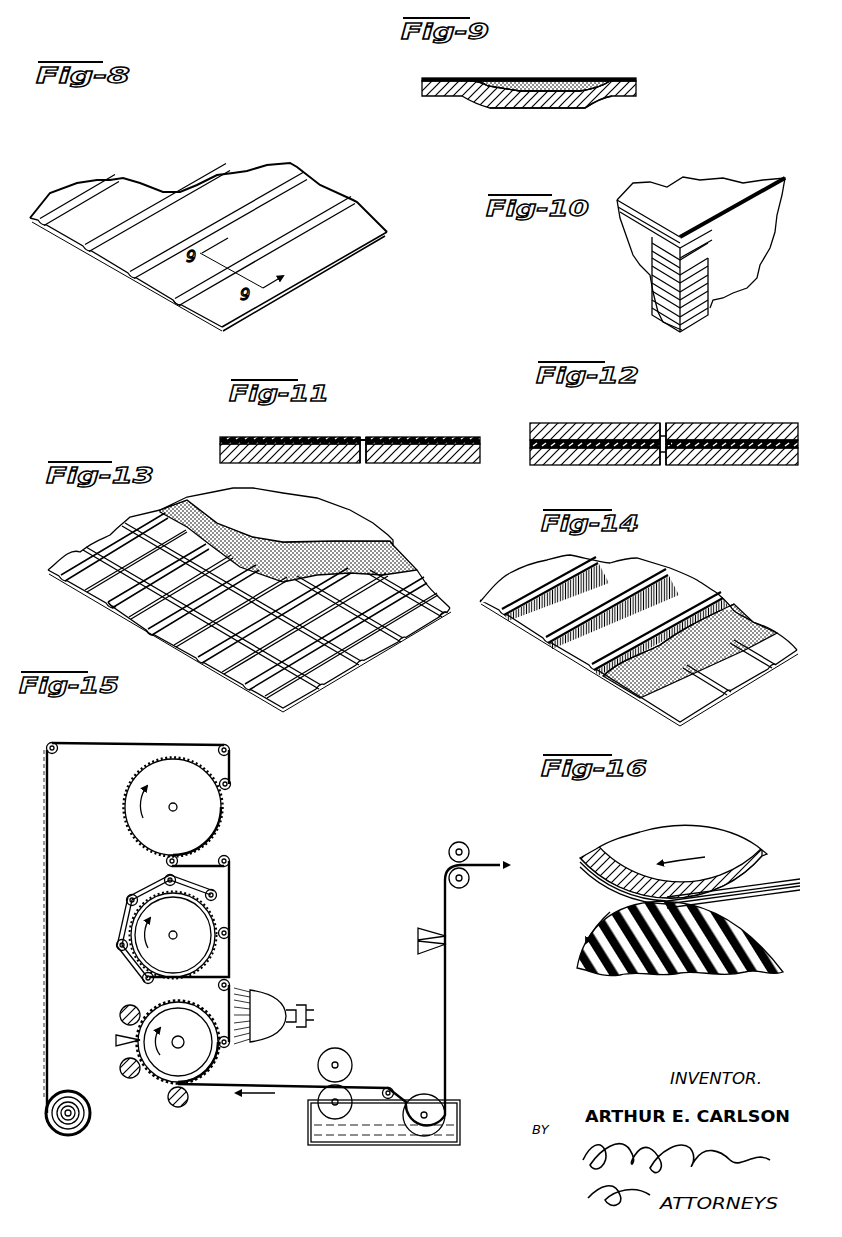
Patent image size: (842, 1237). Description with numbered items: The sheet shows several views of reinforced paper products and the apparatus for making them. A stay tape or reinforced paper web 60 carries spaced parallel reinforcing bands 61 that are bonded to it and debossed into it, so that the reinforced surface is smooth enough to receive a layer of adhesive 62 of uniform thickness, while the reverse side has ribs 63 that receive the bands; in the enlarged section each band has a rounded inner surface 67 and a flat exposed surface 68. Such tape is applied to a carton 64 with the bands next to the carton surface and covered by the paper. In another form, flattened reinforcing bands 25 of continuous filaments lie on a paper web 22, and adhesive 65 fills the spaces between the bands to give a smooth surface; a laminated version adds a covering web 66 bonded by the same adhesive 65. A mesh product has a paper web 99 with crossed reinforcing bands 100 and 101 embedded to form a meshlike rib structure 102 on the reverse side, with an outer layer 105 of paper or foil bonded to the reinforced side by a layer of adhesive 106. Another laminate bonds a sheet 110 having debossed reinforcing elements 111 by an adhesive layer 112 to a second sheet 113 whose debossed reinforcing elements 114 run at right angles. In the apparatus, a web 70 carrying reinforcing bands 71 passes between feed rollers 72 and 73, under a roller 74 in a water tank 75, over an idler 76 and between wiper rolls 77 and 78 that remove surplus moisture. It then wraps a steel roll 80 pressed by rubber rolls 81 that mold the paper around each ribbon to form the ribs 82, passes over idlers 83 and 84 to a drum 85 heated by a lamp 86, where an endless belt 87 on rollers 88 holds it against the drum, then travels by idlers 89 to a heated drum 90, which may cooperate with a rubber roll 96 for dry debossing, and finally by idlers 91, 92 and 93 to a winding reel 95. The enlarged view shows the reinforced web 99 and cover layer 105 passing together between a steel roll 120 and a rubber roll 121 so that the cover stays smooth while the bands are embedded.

In FIG. 8, the reinforced paper web 60 is at (255, 182).
In FIG. 9, the reinforced paper web 60 is at (637, 89).
In FIG. 10, the reinforced paper web 60 is at (687, 308).
In FIG. 8, the reinforcing bands 61 is at (137, 270).
In FIG. 9, the reinforcing bands 61 is at (568, 81).
In FIG. 10, the reinforcing bands 61 is at (710, 267).
In FIG. 9, the layer of adhesive 62 is at (616, 78).
In FIG. 8, the ribs 63 is at (178, 305).
In FIG. 9, the ribs 63 is at (600, 108).
In FIG. 10, the ribs 63 is at (652, 290).
In FIG. 10, the carton 64 is at (747, 268).
In FIG. 9, the inner surface of band 67 is at (545, 97).
In FIG. 9, the exposed surface of band 68 is at (547, 80).
In FIG. 11, the paper web 22 is at (390, 456).
In FIG. 12, the paper web 22 is at (690, 466).
In FIG. 11, the reinforcing bands 25 is at (320, 438).
In FIG. 12, the reinforcing bands 25 is at (590, 456).
In FIG. 11, the adhesive 65 is at (380, 441).
In FIG. 12, the adhesive 65 is at (634, 441).
In FIG. 12, the covering web 66 is at (684, 425).
In FIG. 13, the paper web 99 is at (330, 666).
In FIG. 16, the paper web 99 is at (775, 893).
In FIG. 13, the reinforcing bands 100 is at (385, 660).
In FIG. 16, the reinforcing bands 100 is at (748, 888).
In FIG. 13, the reinforcing bands 101 is at (128, 598).
In FIG. 13, the meshlike rib structure 102 is at (150, 635).
In FIG. 13, the outer layer 105 is at (368, 535).
In FIG. 16, the outer layer 105 is at (780, 880).
In FIG. 13, the layer of adhesive 106 is at (400, 558).
In FIG. 14, the sheet 110 is at (690, 705).
In FIG. 14, the debossed reinforcing elements 111 is at (742, 665).
In FIG. 14, the adhesive layer 112 is at (730, 622).
In FIG. 14, the second sheet 113 is at (675, 592).
In FIG. 14, the debossed reinforcing elements 114 is at (593, 670).
In FIG. 15, the web 70 is at (449, 978).
In FIG. 15, the reinforcing bands 71 is at (420, 938).
In FIG. 15, the feed roller 72 is at (460, 842).
In FIG. 15, the feed roller 73 is at (468, 884).
In FIG. 15, the roller 74 is at (424, 1137).
In FIG. 15, the tank 75 is at (382, 1142).
In FIG. 15, the idler 76 is at (392, 1088).
In FIG. 15, the wiper roll 77 is at (341, 1058).
In FIG. 15, the wiper roll 78 is at (320, 1092).
In FIG. 15, the steel roll 80 is at (158, 1077).
In FIG. 15, the rubber rolls 81 is at (119, 1015).
In FIG. 15, the ribs 82 is at (116, 1040).
In FIG. 15, the idler 83 is at (232, 1046).
In FIG. 15, the idler 84 is at (230, 979).
In FIG. 15, the drum 85 is at (145, 956).
In FIG. 15, the lamp 86 is at (268, 1005).
In FIG. 15, the endless belt 87 is at (122, 920).
In FIG. 15, the rollers 88 is at (127, 899).
In FIG. 15, the idlers 89 is at (232, 861).
In FIG. 15, the heated drum 90 is at (210, 812).
In FIG. 15, the idler 91 is at (232, 785).
In FIG. 15, the idler 92 is at (230, 745).
In FIG. 15, the idler 93 is at (56, 754).
In FIG. 15, the winding reel 95 is at (62, 1136).
In FIG. 15, the rubber roll 96 is at (167, 858).
In FIG. 16, the steel roll 120 is at (725, 856).
In FIG. 16, the rubber roll 121 is at (640, 978).